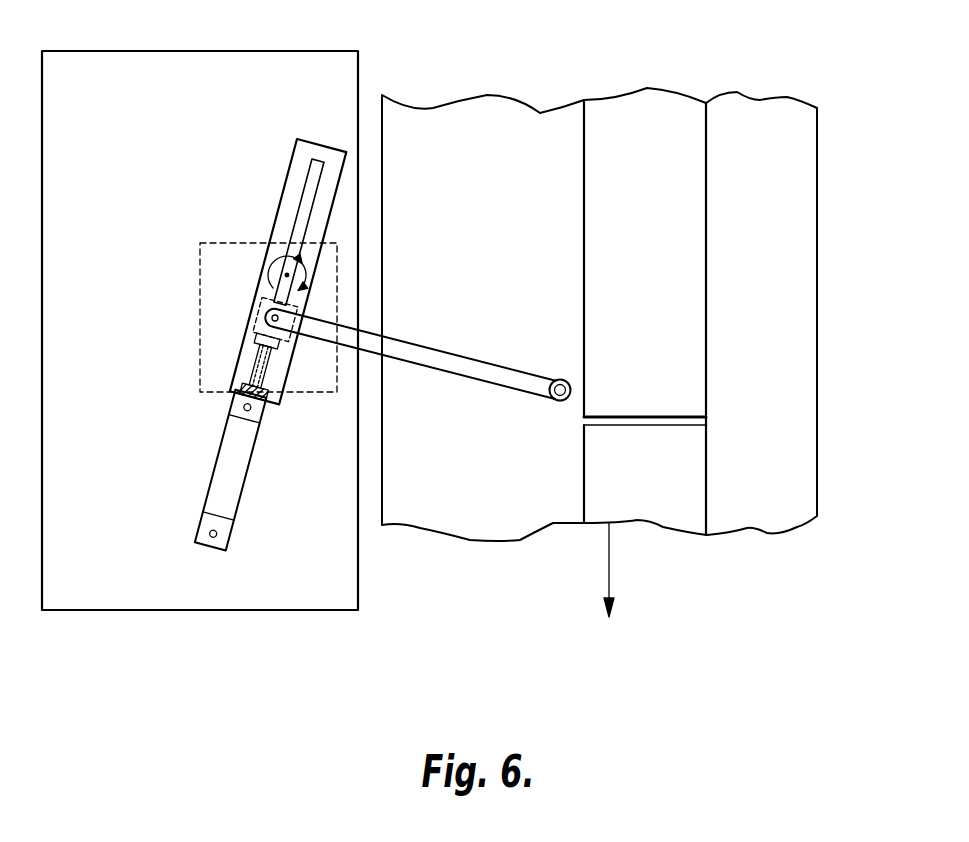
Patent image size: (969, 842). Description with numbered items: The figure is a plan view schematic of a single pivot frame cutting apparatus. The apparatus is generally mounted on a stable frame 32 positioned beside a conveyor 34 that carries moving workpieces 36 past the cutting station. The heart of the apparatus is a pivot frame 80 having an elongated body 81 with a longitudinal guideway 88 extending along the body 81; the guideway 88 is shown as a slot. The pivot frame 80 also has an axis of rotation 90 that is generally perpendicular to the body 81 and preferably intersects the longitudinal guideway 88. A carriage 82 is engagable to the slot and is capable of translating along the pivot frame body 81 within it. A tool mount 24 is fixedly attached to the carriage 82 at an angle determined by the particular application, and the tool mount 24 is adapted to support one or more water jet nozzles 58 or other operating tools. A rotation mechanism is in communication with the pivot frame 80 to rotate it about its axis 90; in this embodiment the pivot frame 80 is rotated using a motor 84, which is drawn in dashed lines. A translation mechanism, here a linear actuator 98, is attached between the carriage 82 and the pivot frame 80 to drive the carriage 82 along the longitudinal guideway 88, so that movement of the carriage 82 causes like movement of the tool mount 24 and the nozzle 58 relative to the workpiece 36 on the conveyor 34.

The stable frame 32 is at (233, 62).
The conveyor 34 is at (623, 330).
The moving workpiece 36 is at (661, 112).
The pivot frame 80 is at (331, 268).
The elongated body 81 is at (327, 202).
The longitudinal guideway 88 is at (305, 177).
The axis of rotation 90 is at (300, 258).
The motor 84 is at (239, 322).
The carriage 82 is at (256, 334).
The tool mount 24 is at (417, 383).
The water jet nozzle 58 is at (558, 402).
The linear actuator 98 is at (205, 506).